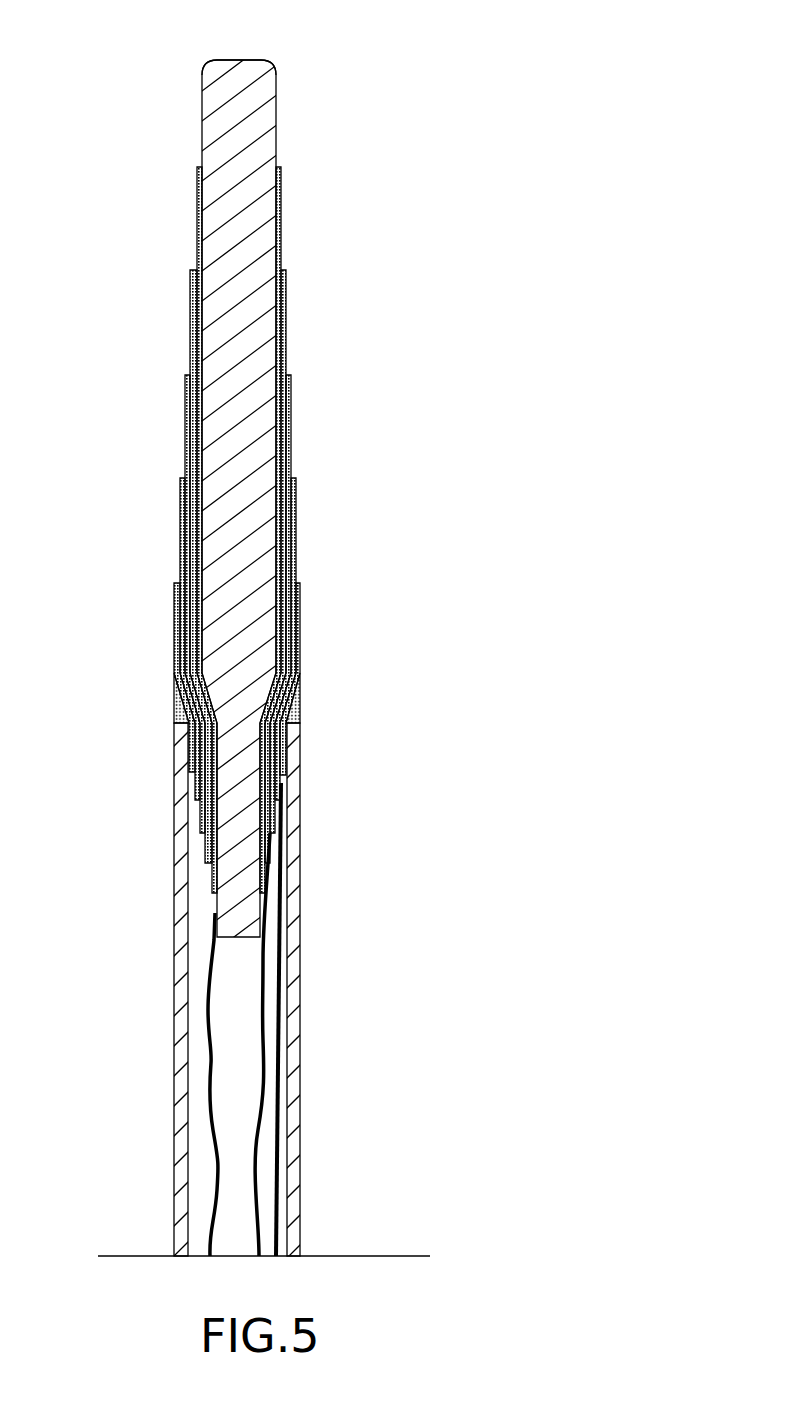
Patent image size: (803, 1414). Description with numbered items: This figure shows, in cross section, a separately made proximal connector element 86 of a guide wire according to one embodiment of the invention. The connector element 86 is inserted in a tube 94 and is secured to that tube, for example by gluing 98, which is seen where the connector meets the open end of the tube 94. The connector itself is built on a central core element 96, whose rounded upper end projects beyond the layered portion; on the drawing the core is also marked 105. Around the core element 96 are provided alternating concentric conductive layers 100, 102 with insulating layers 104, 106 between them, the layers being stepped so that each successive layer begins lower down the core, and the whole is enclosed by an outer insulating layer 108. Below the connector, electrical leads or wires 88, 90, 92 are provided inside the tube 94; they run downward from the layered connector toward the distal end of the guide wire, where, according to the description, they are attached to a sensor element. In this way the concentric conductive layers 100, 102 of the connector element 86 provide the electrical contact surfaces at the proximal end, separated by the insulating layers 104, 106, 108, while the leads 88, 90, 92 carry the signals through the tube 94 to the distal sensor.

The proximal connector element 86 is at (395, 617).
The electrical lead 88 is at (218, 1050).
The electrical lead 90 is at (263, 1118).
The electrical lead 92 is at (297, 1170).
The tube 94 is at (175, 930).
The core element 96 is at (235, 60).
The gluing 98 is at (173, 708).
The conductive layer 100 is at (190, 315).
The conductive layer 102 is at (178, 518).
The insulating layer 104 is at (195, 212).
The core rod 105 is at (277, 113).
The insulating layer 106 is at (183, 420).
The outer insulating layer 108 is at (175, 613).